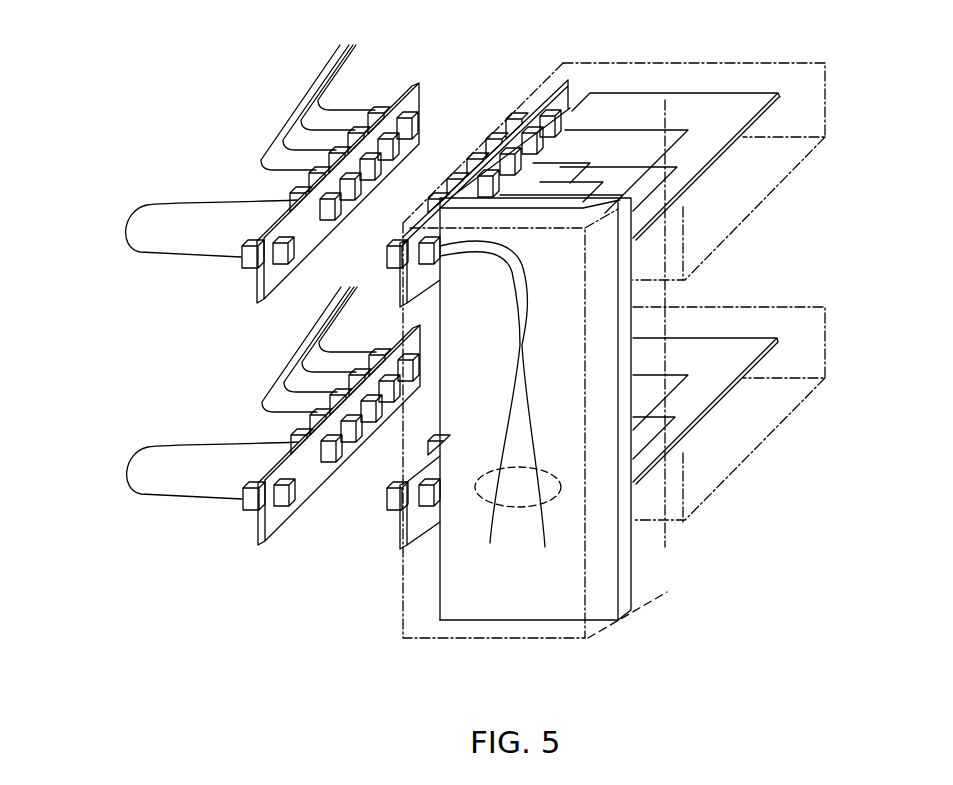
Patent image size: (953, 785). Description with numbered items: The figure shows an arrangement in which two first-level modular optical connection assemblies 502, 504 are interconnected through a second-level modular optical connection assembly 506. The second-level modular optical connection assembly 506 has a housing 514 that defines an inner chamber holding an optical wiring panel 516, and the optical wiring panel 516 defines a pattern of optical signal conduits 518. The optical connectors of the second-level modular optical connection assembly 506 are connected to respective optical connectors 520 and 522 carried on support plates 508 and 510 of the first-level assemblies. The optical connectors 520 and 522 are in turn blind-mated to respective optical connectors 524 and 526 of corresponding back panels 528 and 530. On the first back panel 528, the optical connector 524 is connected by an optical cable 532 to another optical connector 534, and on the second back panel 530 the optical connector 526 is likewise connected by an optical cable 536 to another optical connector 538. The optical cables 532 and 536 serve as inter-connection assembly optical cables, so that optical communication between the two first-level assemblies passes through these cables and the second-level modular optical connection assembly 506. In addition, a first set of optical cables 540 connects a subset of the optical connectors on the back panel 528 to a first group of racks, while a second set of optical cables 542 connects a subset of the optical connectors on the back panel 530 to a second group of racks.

The level-1 modular optical connection assembly 502 is at (805, 111).
The level-1 modular optical connection assembly 504 is at (805, 356).
The level-2 modular optical connection assembly 506 is at (645, 584).
The support plate 508 is at (572, 88).
The support plate 510 is at (402, 542).
The housing 514 is at (648, 602).
The optical wiring panel 516 is at (562, 622).
The optical signal conduits 518 is at (517, 510).
The optical connector 520 is at (387, 258).
The optical connector 522 is at (387, 500).
The optical connector 524 is at (253, 268).
The optical connector 526 is at (211, 522).
The back panel 528 is at (417, 94).
The back panel 530 is at (315, 470).
The optical cable 532 is at (126, 230).
The optical connector 534 is at (300, 193).
The optical cable 536 is at (178, 470).
The optical connector 538 is at (293, 401).
The first set of optical cables 540 is at (338, 84).
The second set of optical cables 542 is at (310, 349).